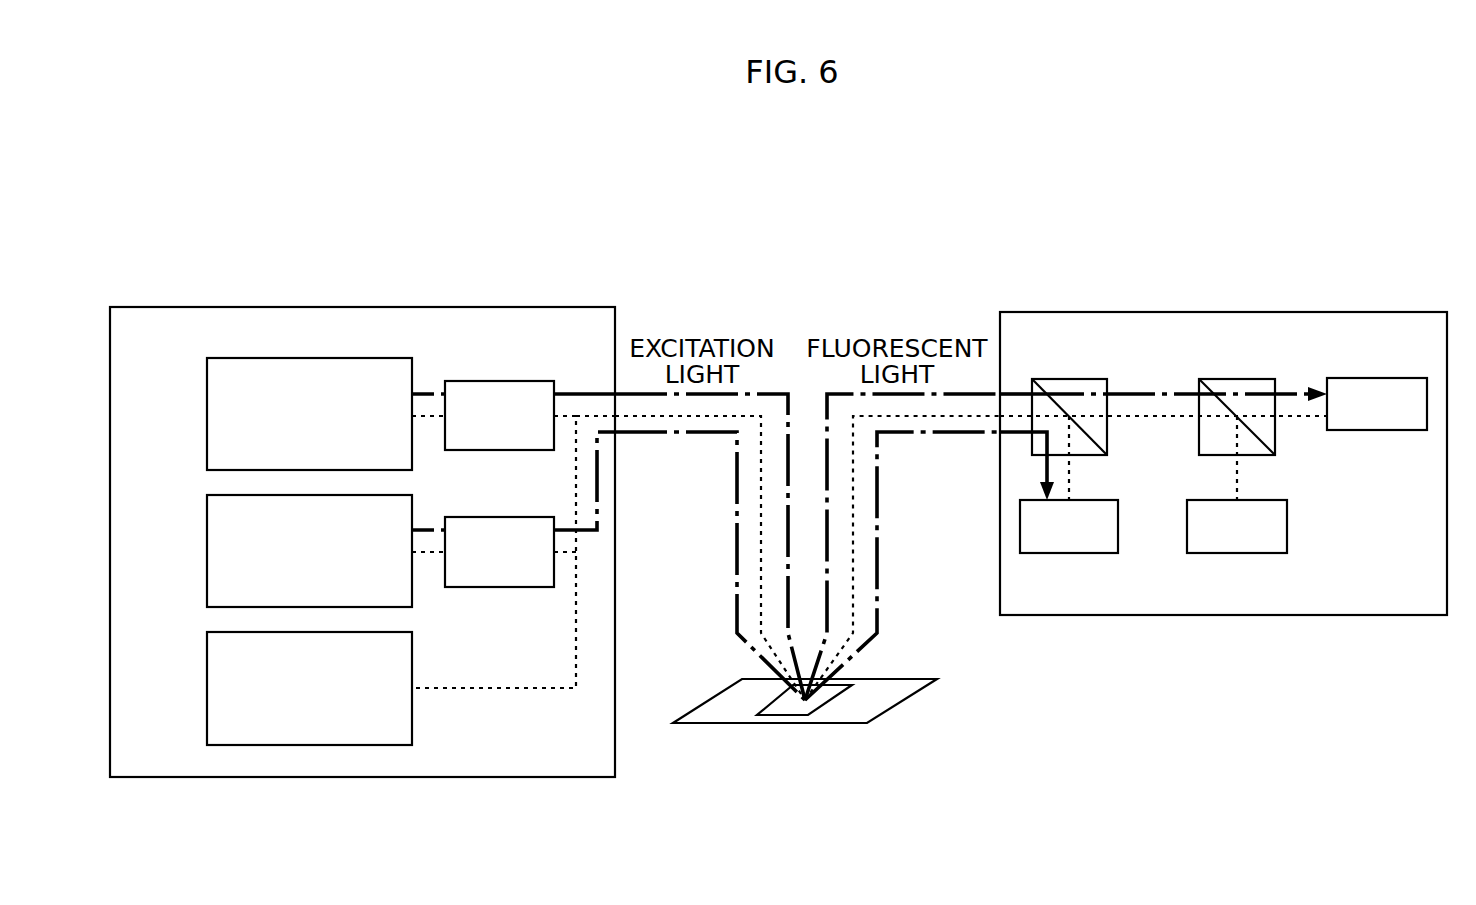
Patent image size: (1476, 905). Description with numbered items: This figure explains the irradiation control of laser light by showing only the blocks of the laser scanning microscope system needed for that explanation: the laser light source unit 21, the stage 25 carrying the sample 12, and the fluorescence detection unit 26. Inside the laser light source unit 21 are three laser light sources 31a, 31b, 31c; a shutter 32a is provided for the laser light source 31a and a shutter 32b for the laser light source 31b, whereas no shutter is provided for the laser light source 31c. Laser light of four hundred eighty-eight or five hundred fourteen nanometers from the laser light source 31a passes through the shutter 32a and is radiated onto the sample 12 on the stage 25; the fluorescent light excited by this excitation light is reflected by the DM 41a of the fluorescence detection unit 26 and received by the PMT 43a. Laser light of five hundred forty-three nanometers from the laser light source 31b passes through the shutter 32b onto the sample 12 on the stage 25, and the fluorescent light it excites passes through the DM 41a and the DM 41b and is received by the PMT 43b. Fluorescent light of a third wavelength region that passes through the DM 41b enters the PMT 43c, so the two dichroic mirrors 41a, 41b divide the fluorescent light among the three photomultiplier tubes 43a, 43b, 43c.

The laser light source unit 21 is at (362, 307).
The fluorescence detection unit 26 is at (1225, 312).
The laser light source 31a is at (207, 551).
The laser light source 31b is at (207, 414).
The laser light source 31c is at (207, 689).
The shutter 32a is at (500, 517).
The shutter 32b is at (500, 380).
The DM 41a is at (1069, 379).
The DM 41b is at (1237, 379).
The PMT 43a is at (1069, 555).
The PMT 43b is at (1377, 378).
The PMT 43c is at (1237, 555).
The stage 25 is at (900, 700).
The sample 12 is at (827, 702).